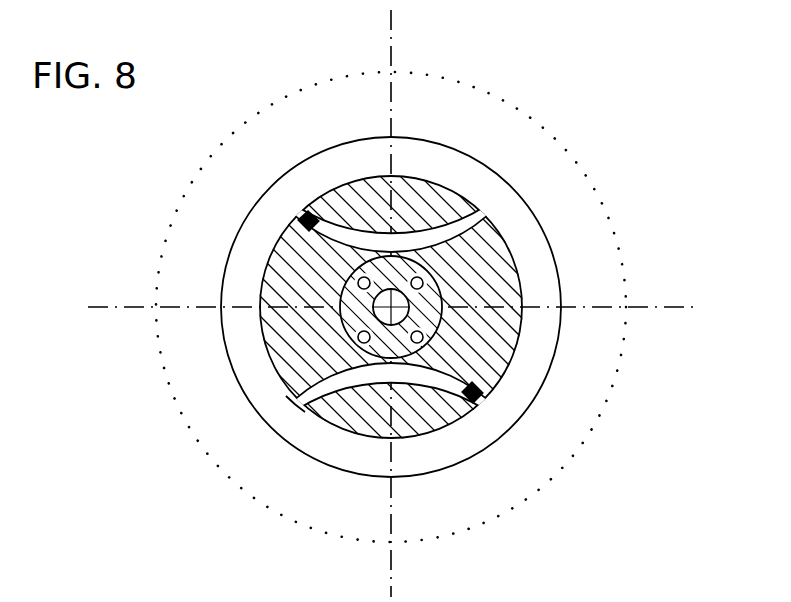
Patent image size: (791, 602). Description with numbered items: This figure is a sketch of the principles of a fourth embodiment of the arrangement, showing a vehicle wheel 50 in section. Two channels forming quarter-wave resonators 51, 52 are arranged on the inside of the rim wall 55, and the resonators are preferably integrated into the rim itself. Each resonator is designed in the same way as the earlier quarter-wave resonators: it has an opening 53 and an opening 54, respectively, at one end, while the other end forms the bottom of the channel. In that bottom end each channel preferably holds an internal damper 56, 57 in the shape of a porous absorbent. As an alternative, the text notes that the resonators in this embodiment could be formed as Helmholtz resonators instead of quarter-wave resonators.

The vehicle wheel 50 is at (640, 270).
The quarter-wave resonator 51 is at (440, 216).
The quarter-wave resonator 52 is at (300, 381).
The opening 53 is at (484, 220).
The opening 54 is at (303, 403).
The rim wall 55 is at (503, 350).
The internal damper 56 is at (304, 212).
The internal damper 57 is at (477, 400).